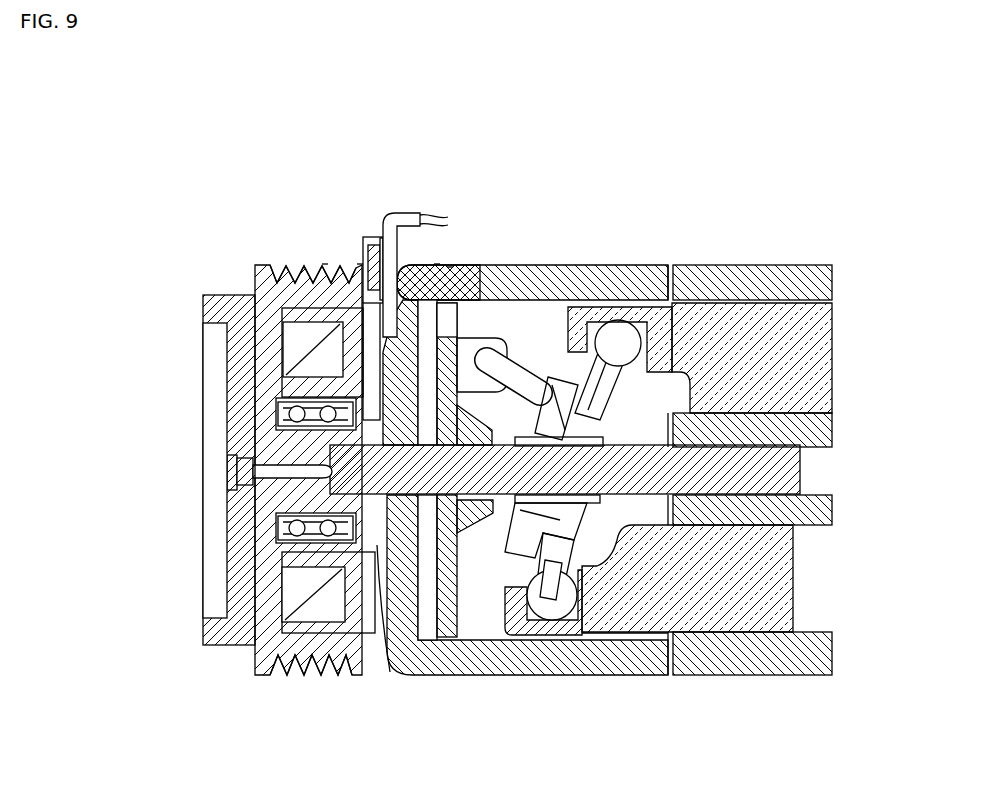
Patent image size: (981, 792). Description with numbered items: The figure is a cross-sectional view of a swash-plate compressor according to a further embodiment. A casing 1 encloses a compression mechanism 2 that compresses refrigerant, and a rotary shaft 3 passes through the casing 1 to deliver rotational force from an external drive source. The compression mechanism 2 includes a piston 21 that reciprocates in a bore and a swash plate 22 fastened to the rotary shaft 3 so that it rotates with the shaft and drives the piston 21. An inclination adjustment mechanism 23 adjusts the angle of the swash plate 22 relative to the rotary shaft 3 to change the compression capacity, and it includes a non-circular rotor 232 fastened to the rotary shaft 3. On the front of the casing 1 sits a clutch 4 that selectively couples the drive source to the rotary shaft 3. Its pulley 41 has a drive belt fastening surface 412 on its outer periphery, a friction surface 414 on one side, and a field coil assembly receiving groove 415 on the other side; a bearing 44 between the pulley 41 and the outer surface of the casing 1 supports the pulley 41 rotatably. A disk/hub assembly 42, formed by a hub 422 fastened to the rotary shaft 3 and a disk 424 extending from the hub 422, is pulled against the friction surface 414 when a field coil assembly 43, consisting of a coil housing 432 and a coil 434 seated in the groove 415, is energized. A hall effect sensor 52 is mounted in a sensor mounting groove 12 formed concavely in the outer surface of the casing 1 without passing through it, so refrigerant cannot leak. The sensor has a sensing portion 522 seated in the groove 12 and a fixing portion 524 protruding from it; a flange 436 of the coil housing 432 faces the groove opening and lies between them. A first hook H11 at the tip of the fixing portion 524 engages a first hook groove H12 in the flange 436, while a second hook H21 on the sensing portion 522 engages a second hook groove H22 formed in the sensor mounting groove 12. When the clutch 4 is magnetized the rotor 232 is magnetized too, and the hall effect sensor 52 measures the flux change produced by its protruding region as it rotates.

The casing 1 is at (525, 436).
The compression mechanism 2 is at (766, 268).
The rotary shaft 3 is at (812, 470).
The clutch 4 is at (250, 431).
The sensor mounting groove 12 is at (470, 271).
The piston 21 is at (717, 630).
The swash plate 22 is at (548, 640).
The inclination adjustment mechanism 23 is at (531, 333).
The rotor 232 is at (448, 642).
The pulley 41 is at (273, 501).
The drive belt fastening surface 412 is at (312, 668).
The friction surface 414 is at (250, 663).
The field coil assembly receiving groove 415 is at (365, 645).
The disk/hub assembly 42 is at (232, 567).
The hub 422 is at (288, 521).
The disk 424 is at (288, 565).
The field coil assembly 43 is at (226, 361).
The coil housing 432 is at (288, 388).
The coil 434 is at (288, 345).
The flange 436 is at (385, 240).
The bearing 44 is at (283, 414).
The hall effect sensor 52 is at (447, 209).
The sensing portion 522 is at (415, 210).
The fixing portion 524 is at (370, 240).
The first hook H11 is at (360, 262).
The first hook groove H12 is at (325, 262).
The second hook H21 is at (437, 262).
The second hook groove H22 is at (450, 265).